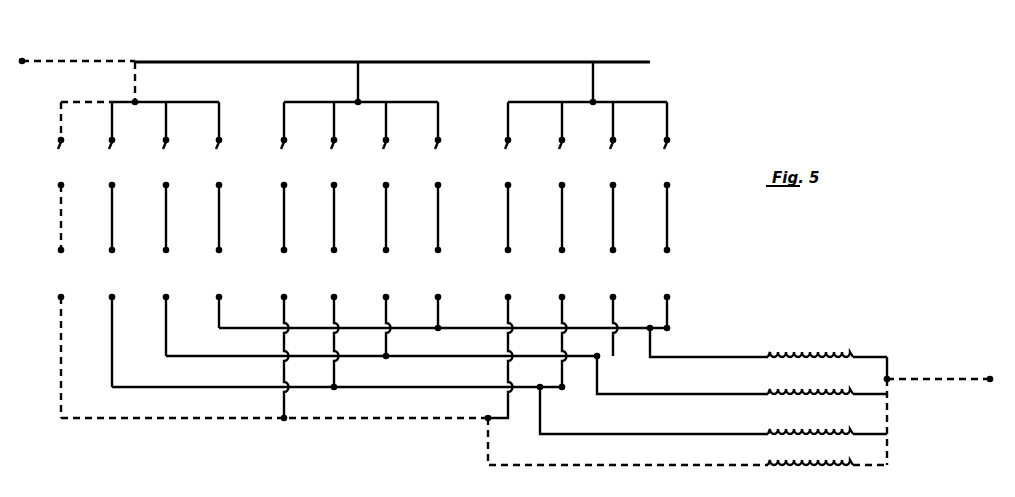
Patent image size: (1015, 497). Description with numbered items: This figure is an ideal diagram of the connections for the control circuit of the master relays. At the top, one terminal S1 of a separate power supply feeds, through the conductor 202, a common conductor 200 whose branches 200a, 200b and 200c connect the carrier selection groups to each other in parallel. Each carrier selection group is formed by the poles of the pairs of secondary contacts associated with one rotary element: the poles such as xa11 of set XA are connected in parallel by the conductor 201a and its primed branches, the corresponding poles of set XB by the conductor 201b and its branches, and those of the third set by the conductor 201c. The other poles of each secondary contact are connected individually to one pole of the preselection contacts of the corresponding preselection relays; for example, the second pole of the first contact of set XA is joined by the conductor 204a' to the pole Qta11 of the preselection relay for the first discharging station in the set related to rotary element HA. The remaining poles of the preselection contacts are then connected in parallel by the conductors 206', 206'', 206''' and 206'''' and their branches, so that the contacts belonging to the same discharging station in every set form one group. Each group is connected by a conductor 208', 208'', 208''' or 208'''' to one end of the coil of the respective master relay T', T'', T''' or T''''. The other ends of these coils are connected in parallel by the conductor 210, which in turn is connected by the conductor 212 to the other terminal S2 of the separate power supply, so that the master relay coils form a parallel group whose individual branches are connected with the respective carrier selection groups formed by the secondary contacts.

The terminal of the separate power supply S1 is at (23, 51).
The conductor 202 is at (78, 50).
The conductor 200 is at (229, 60).
The branch of conductor 200 200a is at (135, 85).
The branch of conductor 200 200b is at (359, 87).
The branch of conductor 200 200c is at (594, 87).
The conductor 201a is at (118, 108).
The conductor 201b is at (336, 108).
The conductor 201c is at (562, 108).
The conductor 204a' is at (36, 217).
The conductor 206' is at (276, 428).
The conductor 206'' is at (338, 397).
The conductor 206''' is at (383, 367).
The conductor 206'''' is at (444, 339).
The conductor 208' is at (709, 342).
The conductor 208'' is at (682, 375).
The conductor 208''' is at (654, 410).
The conductor 208'''' is at (628, 441).
The master relay coil T' is at (827, 453).
The master relay coil T'' is at (827, 422).
The master relay coil T''' is at (827, 382).
The master relay coil T'''' is at (827, 344).
The conductor 210 is at (890, 418).
The conductor 212 is at (925, 378).
The terminal of the separate power supply S2 is at (990, 385).
The pole of secondary contact xa11 is at (66, 153).
The pole of preselection contact Qta11 is at (65, 261).